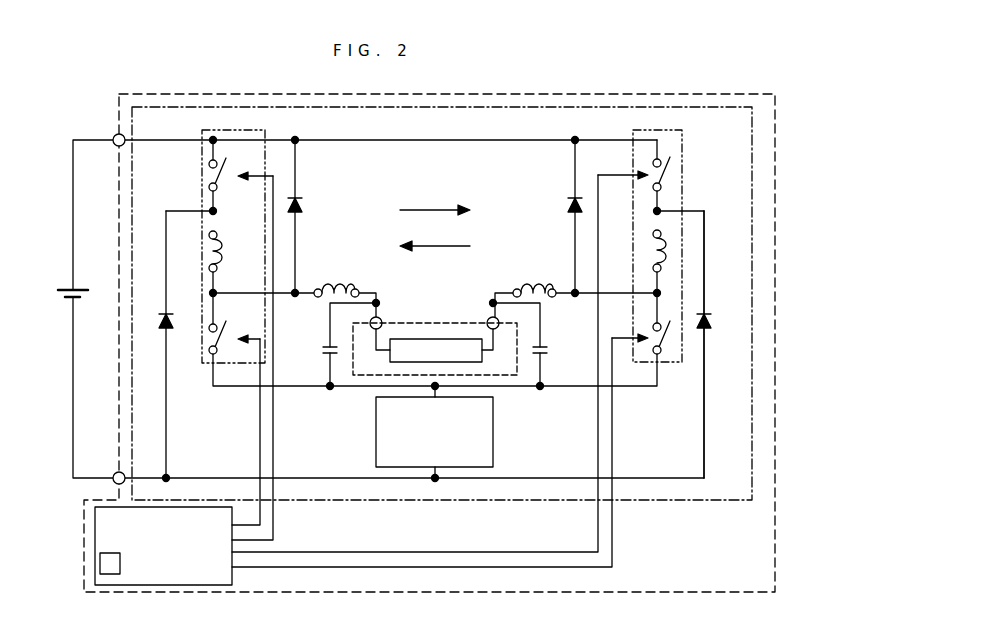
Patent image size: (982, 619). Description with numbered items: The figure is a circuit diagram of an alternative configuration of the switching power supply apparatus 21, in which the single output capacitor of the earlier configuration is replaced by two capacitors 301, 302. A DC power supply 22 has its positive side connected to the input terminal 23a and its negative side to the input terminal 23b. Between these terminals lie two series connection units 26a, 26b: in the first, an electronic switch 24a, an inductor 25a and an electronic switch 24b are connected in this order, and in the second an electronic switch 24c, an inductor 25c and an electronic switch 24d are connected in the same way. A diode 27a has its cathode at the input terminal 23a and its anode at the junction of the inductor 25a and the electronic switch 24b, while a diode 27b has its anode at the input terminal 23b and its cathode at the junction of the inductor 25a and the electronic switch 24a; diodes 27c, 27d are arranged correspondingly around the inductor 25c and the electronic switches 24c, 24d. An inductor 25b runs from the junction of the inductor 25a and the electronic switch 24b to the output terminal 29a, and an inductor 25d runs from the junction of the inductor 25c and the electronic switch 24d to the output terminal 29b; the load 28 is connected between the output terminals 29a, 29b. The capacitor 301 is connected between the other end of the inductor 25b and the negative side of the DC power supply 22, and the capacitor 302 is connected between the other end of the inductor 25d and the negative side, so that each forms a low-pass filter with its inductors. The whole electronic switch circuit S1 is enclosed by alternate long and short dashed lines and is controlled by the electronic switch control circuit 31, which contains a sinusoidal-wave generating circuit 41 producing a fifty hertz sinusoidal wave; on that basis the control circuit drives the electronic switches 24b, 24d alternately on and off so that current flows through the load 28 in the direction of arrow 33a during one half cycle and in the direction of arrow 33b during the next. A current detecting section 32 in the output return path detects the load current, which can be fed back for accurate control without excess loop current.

The switching power supply apparatus 21 is at (690, 93).
The electronic switch circuit S1 is at (670, 501).
The DC power supply 22 is at (83, 287).
The input terminal 23a is at (115, 134).
The input terminal 23b is at (115, 472).
The electronic switch 24a is at (214, 176).
The electronic switch 24b is at (207, 349).
The electronic switch 24c is at (665, 176).
The electronic switch 24d is at (665, 338).
The inductor 25a is at (222, 252).
The inductor 25b is at (337, 280).
The inductor 25c is at (654, 254).
The inductor 25d is at (526, 280).
The series connection unit 26a is at (266, 130).
The series connection unit 26b is at (683, 130).
The diode 27a is at (305, 205).
The diode 27b is at (173, 320).
The diode 27c is at (567, 206).
The diode 27d is at (709, 319).
The load 28 is at (482, 358).
The output terminal 29a is at (381, 318).
The output terminal 29b is at (488, 318).
The capacitor 301 is at (325, 351).
The capacitor 302 is at (545, 352).
The electronic switch control circuit 31 is at (95, 547).
The current detecting section 32 is at (376, 430).
The arrow 33a is at (436, 208).
The arrow 33b is at (432, 245).
The sinusoidal-wave generating circuit 41 is at (100, 565).